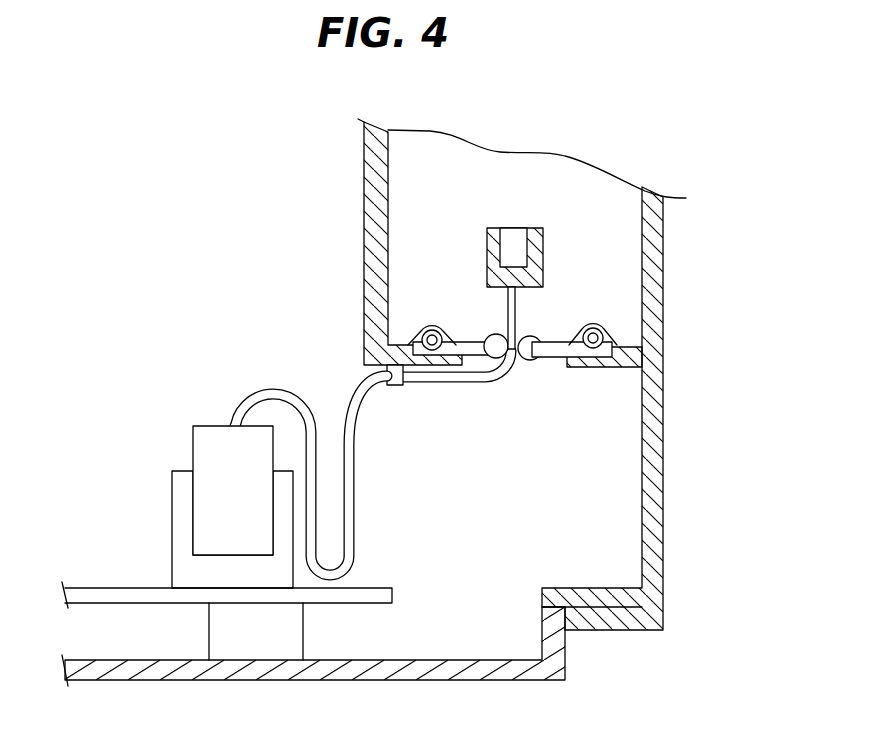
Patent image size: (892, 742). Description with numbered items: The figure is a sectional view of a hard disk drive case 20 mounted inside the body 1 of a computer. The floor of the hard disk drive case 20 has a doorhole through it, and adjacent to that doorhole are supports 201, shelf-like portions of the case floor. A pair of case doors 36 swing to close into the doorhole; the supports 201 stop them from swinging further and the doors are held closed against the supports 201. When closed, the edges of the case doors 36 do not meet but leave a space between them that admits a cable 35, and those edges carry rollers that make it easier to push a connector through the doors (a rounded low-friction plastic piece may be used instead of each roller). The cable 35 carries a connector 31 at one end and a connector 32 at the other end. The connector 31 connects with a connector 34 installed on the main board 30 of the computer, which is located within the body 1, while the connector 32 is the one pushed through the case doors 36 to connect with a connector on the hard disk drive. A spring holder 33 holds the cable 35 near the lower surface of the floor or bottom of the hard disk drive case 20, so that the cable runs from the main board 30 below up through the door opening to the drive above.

The body 1 is at (663, 515).
The hard disk drive case 20 is at (376, 189).
The supports 201 is at (590, 367).
The main board 30 is at (370, 590).
The connector 31 is at (205, 426).
The connector 32 is at (537, 237).
The spring holder 33 is at (464, 374).
The connector 34 is at (172, 515).
The cable 35 is at (283, 390).
The case doors 36 is at (553, 347).